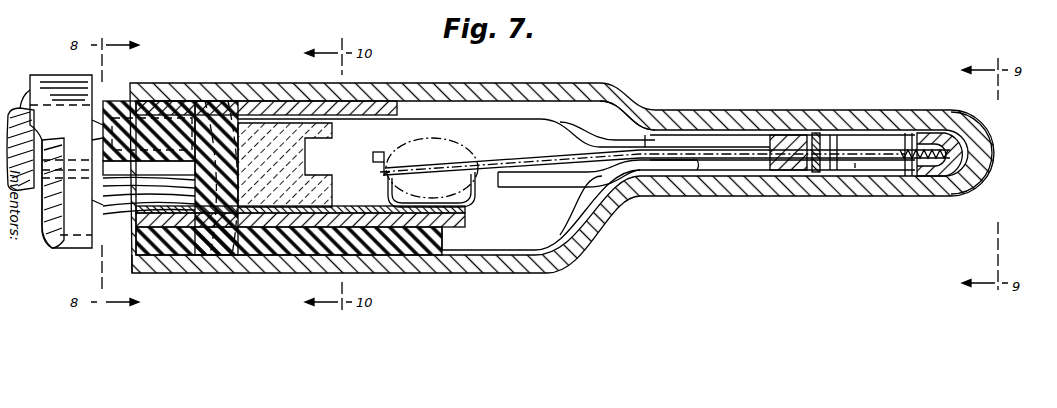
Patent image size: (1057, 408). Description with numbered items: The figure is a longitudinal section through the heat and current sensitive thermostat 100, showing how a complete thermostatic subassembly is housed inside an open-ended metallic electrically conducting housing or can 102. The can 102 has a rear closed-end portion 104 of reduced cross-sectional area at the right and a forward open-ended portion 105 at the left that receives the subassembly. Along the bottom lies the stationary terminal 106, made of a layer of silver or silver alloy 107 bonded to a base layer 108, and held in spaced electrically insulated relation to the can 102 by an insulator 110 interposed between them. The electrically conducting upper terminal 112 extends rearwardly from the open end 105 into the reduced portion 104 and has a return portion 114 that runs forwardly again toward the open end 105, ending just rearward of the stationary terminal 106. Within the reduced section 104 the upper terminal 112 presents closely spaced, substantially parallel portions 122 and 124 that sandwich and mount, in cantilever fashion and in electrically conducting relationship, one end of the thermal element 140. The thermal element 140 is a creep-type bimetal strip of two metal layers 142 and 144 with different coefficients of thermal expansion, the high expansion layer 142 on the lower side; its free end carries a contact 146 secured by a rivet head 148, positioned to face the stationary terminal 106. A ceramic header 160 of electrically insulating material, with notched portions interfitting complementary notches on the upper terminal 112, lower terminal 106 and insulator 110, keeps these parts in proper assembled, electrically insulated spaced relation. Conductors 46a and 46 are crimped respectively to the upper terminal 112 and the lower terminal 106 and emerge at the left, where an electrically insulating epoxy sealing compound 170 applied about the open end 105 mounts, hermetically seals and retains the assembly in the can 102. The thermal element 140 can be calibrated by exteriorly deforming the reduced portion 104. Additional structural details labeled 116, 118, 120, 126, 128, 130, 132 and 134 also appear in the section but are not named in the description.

The conductor 46 is at (50, 165).
The conductor 46a is at (18, 106).
The heat and current sensitive thermostat 100 is at (694, 82).
The housing or can 102 is at (446, 94).
The rear closed-end portion 104 is at (905, 111).
The forward open-ended portion 105 is at (133, 264).
The stationary terminal 106 is at (470, 219).
The silver or silver alloy layer 107 is at (467, 209).
The base layer 108 is at (452, 230).
The insulator 110 is at (415, 260).
The upper terminal 112 is at (517, 110).
The return portion 114 is at (548, 181).
The pocket 116 is at (566, 126).
The lower tube section 118 is at (702, 172).
The tube bend 120 is at (603, 183).
The closely spaced portion 122 is at (727, 140).
The closely spaced portion 124 is at (740, 165).
The washer 126 is at (826, 152).
The end plug 128 is at (903, 150).
The retainer 130 is at (831, 176).
The housing shoulder 132 is at (598, 143).
The lower housing shoulder 134 is at (626, 176).
The thermal element 140 is at (372, 166).
The high expansion layer 142 is at (383, 173).
The metal layer 144 is at (378, 151).
The contact 146 is at (389, 195).
The rivet head 148 is at (437, 162).
The ceramic header 160 is at (284, 168).
The sealing compound 170 is at (114, 97).